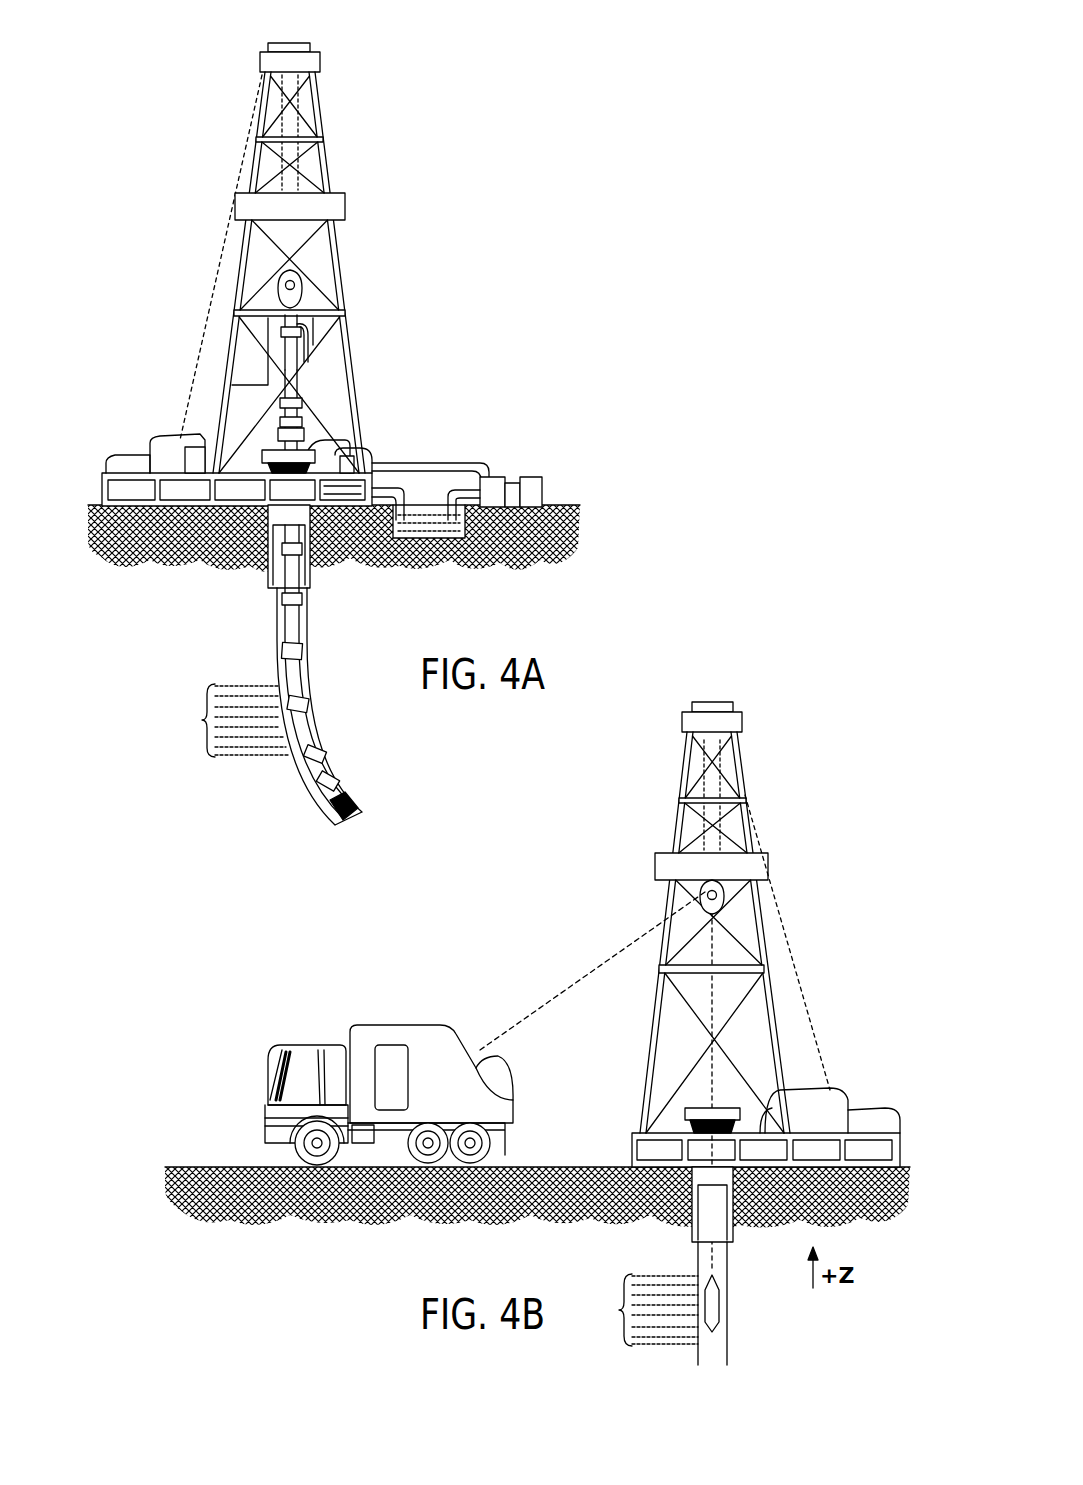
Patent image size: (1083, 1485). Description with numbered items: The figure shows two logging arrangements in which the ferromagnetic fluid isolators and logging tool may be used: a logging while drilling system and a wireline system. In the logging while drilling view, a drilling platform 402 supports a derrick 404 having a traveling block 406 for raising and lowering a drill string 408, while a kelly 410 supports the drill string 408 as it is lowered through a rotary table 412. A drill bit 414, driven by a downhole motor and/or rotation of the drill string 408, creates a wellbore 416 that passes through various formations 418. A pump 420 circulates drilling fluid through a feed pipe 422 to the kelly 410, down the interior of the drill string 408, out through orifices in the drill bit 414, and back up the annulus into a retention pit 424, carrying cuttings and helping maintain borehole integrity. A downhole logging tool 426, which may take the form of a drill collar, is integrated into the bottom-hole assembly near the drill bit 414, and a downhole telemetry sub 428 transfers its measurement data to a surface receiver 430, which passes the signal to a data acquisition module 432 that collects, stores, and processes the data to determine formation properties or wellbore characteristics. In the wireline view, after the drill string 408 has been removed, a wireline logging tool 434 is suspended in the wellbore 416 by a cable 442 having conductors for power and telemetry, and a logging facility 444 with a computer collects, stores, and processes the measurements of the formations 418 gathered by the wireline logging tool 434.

In FIG. 4A, the drilling platform 402 is at (100, 490).
In FIG. 4B, the drilling platform 402 is at (632, 1157).
In FIG. 4A, the derrick 404 is at (322, 148).
In FIG. 4B, the derrick 404 is at (640, 1125).
In FIG. 4A, the traveling block 406 is at (298, 283).
In FIG. 4B, the traveling block 406 is at (728, 893).
In FIG. 4A, the drill string 408 is at (298, 625).
In FIG. 4A, the kelly 410 is at (290, 347).
In FIG. 4A, the rotary table 412 is at (298, 445).
In FIG. 4B, the rotary table 412 is at (695, 1108).
In FIG. 4A, the drill bit 414 is at (330, 815).
In FIG. 4A, the wellbore 416 is at (310, 656).
In FIG. 4A, the formations 418 is at (219, 720).
In FIG. 4B, the formations 418 is at (635, 1310).
In FIG. 4A, the pump 420 is at (495, 475).
In FIG. 4A, the feed pipe 422 is at (437, 462).
In FIG. 4A, the retention pit 424 is at (422, 515).
In FIG. 4A, the downhole logging tool 426 is at (320, 795).
In FIG. 4A, the downhole telemetry sub 428 is at (305, 765).
In FIG. 4A, the surface receiver 430 is at (293, 405).
In FIG. 4A, the data acquisition module 432 is at (175, 440).
In FIG. 4B, the wireline logging tool 434 is at (720, 1303).
In FIG. 4B, the cable 442 is at (632, 946).
In FIG. 4B, the logging facility 444 is at (417, 1025).